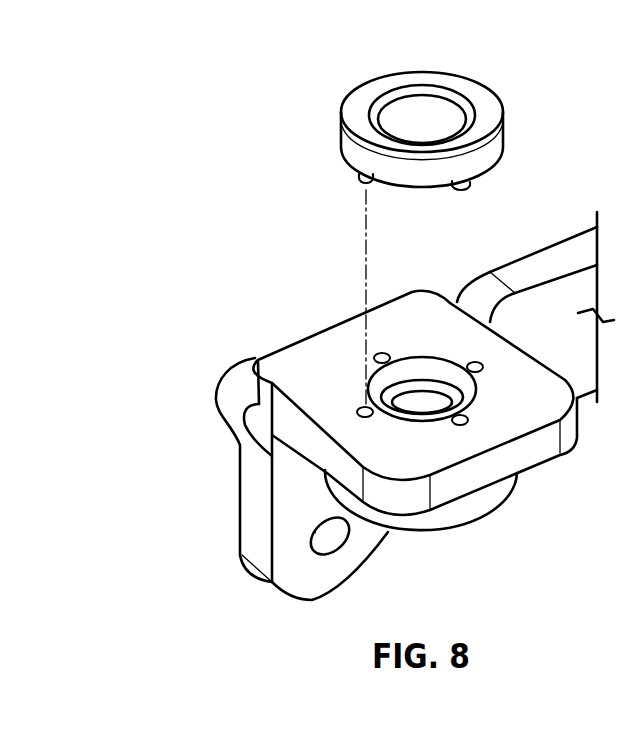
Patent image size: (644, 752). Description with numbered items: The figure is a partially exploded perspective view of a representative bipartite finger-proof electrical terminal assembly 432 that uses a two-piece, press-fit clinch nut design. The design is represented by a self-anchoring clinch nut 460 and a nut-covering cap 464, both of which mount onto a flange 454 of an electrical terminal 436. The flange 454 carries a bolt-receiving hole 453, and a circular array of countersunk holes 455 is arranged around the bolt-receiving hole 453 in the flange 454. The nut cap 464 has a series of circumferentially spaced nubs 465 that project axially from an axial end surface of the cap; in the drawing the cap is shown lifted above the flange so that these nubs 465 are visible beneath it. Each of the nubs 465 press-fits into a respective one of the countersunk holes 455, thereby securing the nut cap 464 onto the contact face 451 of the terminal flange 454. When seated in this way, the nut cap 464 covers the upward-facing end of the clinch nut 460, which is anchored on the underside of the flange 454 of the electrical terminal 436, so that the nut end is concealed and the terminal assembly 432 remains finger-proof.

The mounting assembly 432 is at (222, 110).
The electrical terminal 436 is at (283, 293).
The contact face 451 is at (292, 392).
The bolt-receiving hole 453 is at (420, 381).
The flange 454 is at (310, 440).
The countersunk holes 455 is at (323, 363).
The clinch nut 460 is at (337, 493).
The nut cap 464 is at (370, 93).
The nubs 465 is at (360, 179).